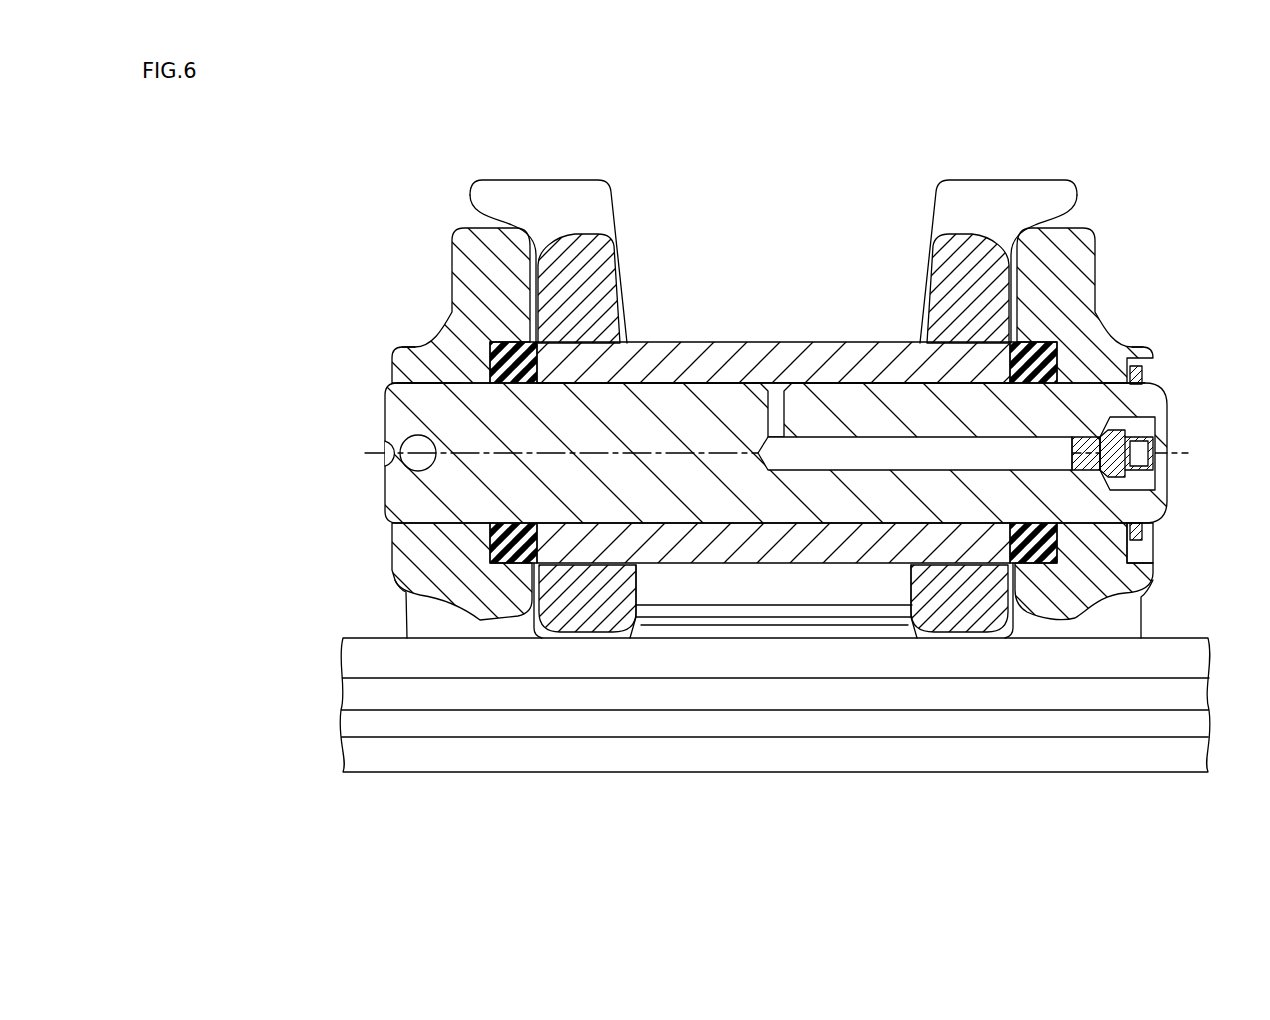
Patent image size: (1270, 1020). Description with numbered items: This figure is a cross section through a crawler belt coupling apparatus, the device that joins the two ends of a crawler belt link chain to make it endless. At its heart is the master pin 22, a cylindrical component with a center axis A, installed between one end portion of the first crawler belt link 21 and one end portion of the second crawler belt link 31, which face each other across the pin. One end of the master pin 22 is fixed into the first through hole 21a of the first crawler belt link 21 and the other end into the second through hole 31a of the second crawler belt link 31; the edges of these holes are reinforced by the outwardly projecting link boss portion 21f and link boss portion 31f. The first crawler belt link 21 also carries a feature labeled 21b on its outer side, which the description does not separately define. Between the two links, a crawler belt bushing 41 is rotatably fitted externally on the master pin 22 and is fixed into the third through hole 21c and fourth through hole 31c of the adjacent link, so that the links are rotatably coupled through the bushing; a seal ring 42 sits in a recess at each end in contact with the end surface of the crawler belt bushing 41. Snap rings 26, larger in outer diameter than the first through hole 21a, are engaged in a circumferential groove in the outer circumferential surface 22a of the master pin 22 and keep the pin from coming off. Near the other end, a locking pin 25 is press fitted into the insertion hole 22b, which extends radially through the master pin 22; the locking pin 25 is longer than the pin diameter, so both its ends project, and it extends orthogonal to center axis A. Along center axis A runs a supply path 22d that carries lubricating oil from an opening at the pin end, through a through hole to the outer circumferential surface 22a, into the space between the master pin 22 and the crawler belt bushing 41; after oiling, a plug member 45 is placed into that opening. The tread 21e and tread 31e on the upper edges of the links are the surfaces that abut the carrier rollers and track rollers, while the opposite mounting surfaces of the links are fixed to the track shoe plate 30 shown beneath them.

The first crawler belt link 21 is at (975, 273).
The first through hole 21a is at (1113, 383).
The groove of second roller 21b is at (1127, 547).
The third through hole 21c is at (953, 343).
The tread 21e is at (1028, 177).
The link boss portion 21f is at (1127, 345).
The master pin 22 is at (700, 410).
The outer circumferential surface 22a is at (738, 383).
The insertion hole 22b is at (408, 445).
The supply path 22d is at (847, 437).
The locking pin 25 is at (418, 462).
The snap ring 26 is at (1131, 360).
The track shoe plate 30 is at (1185, 647).
The second crawler belt link 31 is at (573, 263).
The second through hole 31a is at (428, 385).
The fourth through hole 31c is at (597, 343).
The tread 31e is at (521, 178).
The link boss portion 31f is at (410, 357).
The crawler belt bushing 41 is at (800, 363).
The seal ring 42 is at (500, 363).
The plug member 45 is at (1120, 463).
The center axis A is at (1173, 446).